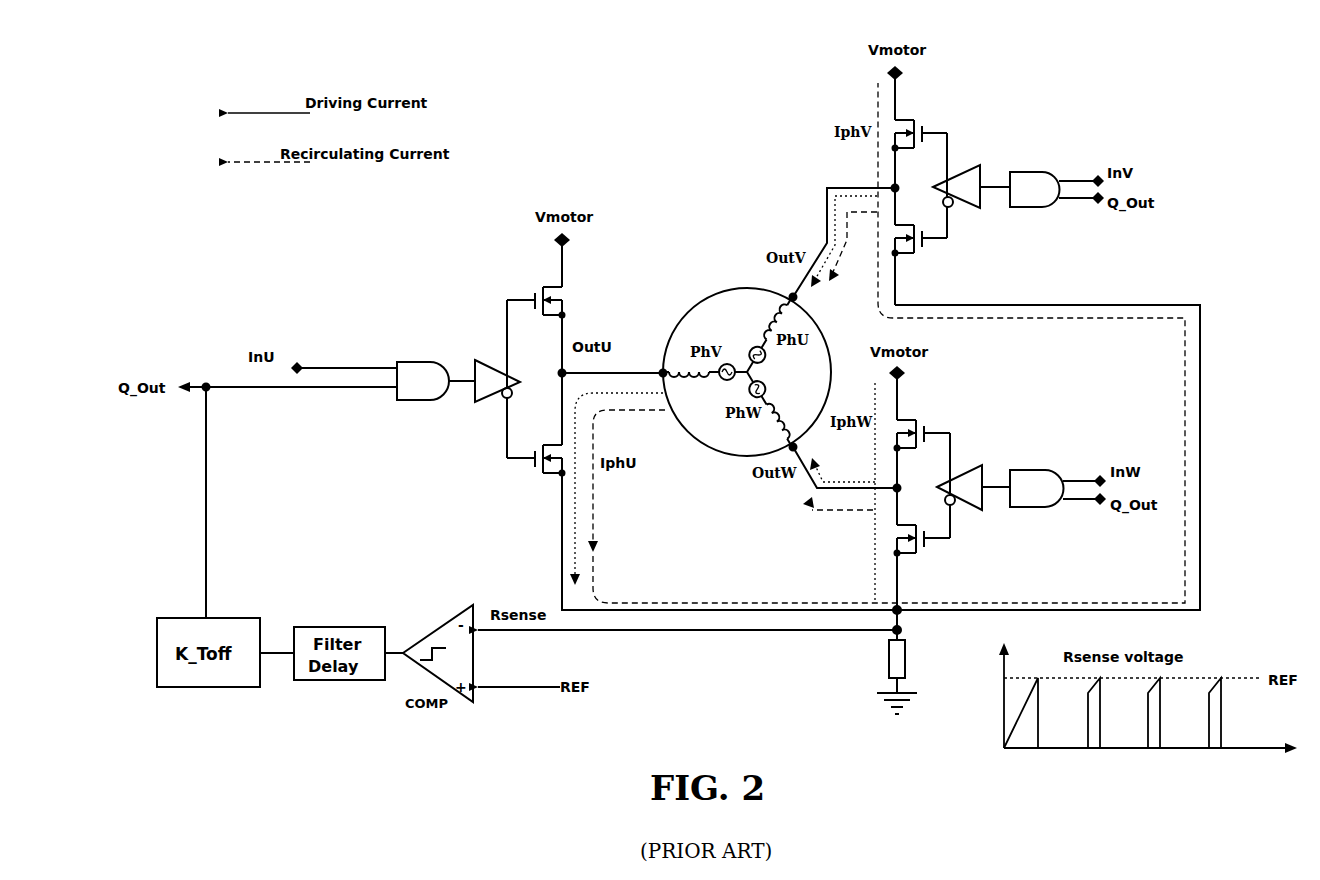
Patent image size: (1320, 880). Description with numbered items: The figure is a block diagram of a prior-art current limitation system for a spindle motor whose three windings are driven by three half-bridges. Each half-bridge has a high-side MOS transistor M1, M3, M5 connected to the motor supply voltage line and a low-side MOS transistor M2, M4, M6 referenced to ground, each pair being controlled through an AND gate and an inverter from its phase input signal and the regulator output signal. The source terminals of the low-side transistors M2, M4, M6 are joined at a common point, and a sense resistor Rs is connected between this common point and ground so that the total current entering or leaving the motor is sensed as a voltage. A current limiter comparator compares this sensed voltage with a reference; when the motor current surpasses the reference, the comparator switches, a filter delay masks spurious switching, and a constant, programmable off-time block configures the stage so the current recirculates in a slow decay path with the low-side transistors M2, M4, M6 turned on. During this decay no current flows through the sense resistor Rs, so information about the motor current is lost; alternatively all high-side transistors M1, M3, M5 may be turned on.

The high-side MOS transistor M1 is at (536, 300).
The low-side MOS transistor M2 is at (536, 460).
The high-side MOS transistor M3 is at (923, 132).
The low-side MOS transistor M4 is at (923, 243).
The high-side MOS transistor M5 is at (924, 432).
The low-side MOS transistor M6 is at (925, 542).
The sense resistor Rs is at (911, 659).